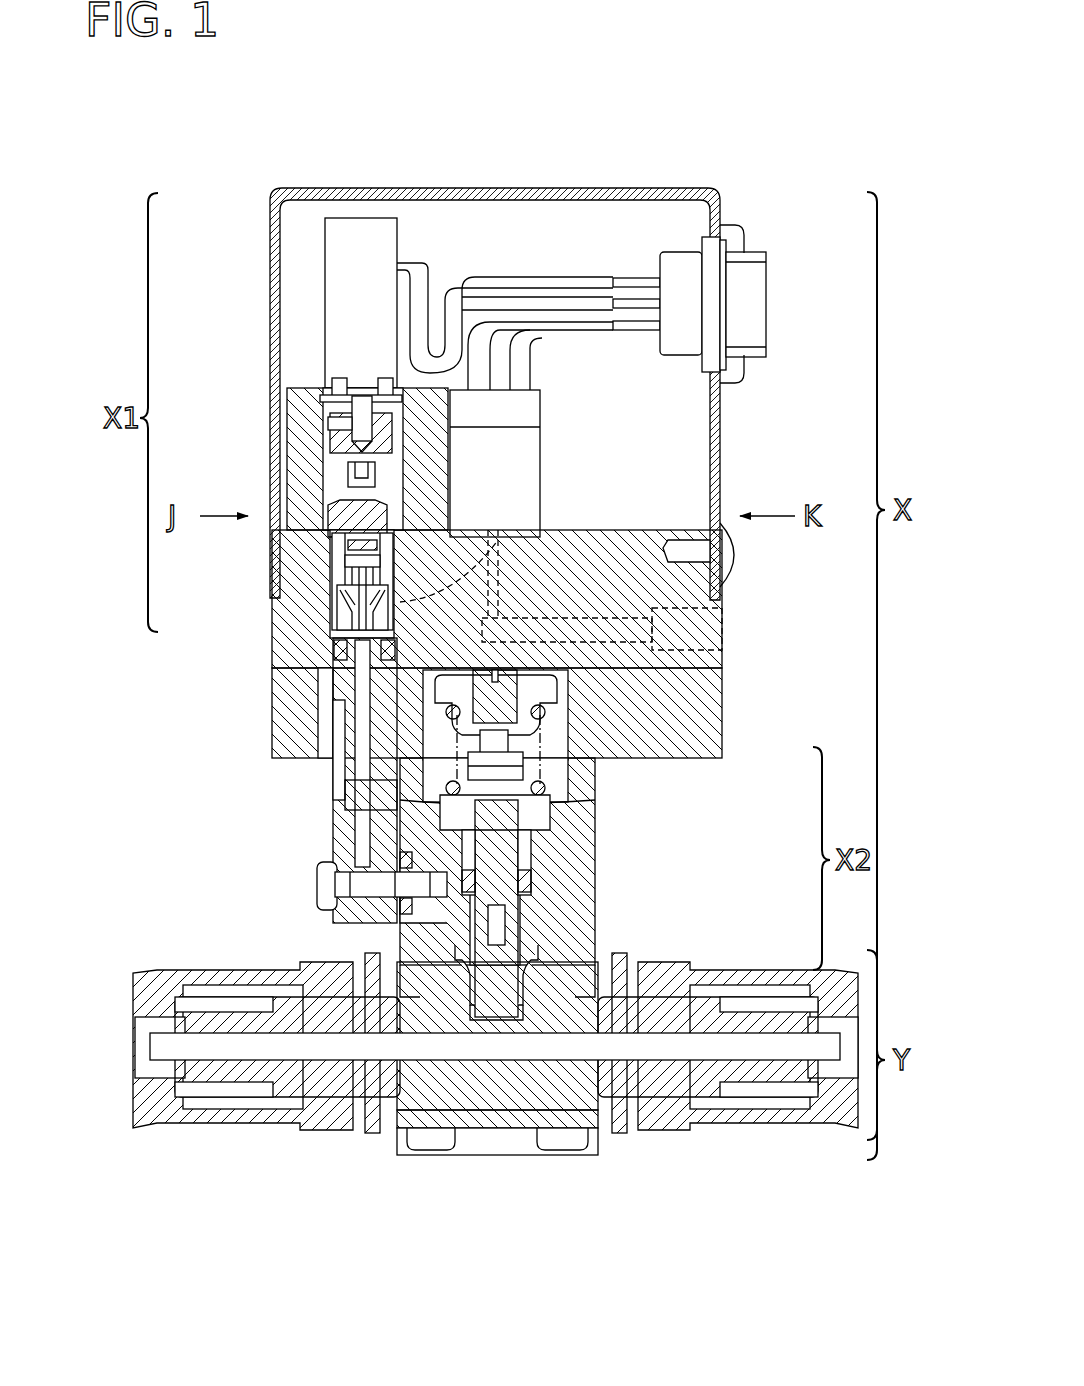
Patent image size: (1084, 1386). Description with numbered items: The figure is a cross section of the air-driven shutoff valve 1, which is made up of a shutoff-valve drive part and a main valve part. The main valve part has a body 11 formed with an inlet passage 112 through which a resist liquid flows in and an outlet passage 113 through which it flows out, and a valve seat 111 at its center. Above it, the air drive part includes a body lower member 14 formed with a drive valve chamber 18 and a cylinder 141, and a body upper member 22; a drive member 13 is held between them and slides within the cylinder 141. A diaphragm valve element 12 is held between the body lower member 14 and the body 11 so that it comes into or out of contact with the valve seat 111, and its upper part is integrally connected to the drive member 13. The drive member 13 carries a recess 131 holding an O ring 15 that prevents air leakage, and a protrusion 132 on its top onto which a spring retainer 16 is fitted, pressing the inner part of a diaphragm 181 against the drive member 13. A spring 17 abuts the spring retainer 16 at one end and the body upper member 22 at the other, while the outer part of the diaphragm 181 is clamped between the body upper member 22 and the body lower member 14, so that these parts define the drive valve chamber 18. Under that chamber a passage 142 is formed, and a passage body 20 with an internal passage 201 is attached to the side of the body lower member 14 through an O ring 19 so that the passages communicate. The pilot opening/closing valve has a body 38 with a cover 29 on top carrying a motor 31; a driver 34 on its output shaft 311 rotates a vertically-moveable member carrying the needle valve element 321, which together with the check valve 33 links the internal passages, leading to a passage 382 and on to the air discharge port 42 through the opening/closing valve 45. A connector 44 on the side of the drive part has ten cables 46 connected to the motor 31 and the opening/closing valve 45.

The air-driven shutoff valve 1 is at (582, 134).
The body 11 is at (667, 1080).
The valve seat 111 is at (422, 1030).
The inlet passage 112 is at (212, 1062).
The outlet passage 113 is at (776, 1062).
The diaphragm valve element 12 is at (562, 940).
The drive member 13 is at (532, 844).
The recess 131 is at (410, 922).
The protrusion 132 is at (542, 822).
The body lower member 14 is at (532, 916).
The cylinder 141 is at (552, 870).
The passage 142 is at (412, 882).
The O ring 15 is at (532, 892).
The spring retainer 16 is at (542, 792).
The spring 17 is at (557, 778).
The drive valve chamber 18 is at (362, 802).
The diaphragm 181 is at (345, 776).
The O ring 19 is at (374, 832).
The passage body 20 is at (322, 690).
The passage 201 is at (356, 740).
The body upper member 22 is at (586, 740).
The cover 29 is at (302, 395).
The motor 31 is at (350, 285).
The output shaft 311 is at (346, 428).
The needle valve element 321 is at (346, 620).
The check valve 33 is at (336, 590).
The driver 34 is at (346, 446).
The body 38 is at (330, 548).
The passage 382 is at (510, 556).
The air discharge port 42 is at (680, 622).
The connector 44 is at (752, 254).
The opening/closing valve 45 is at (526, 474).
The cables 46 is at (566, 274).